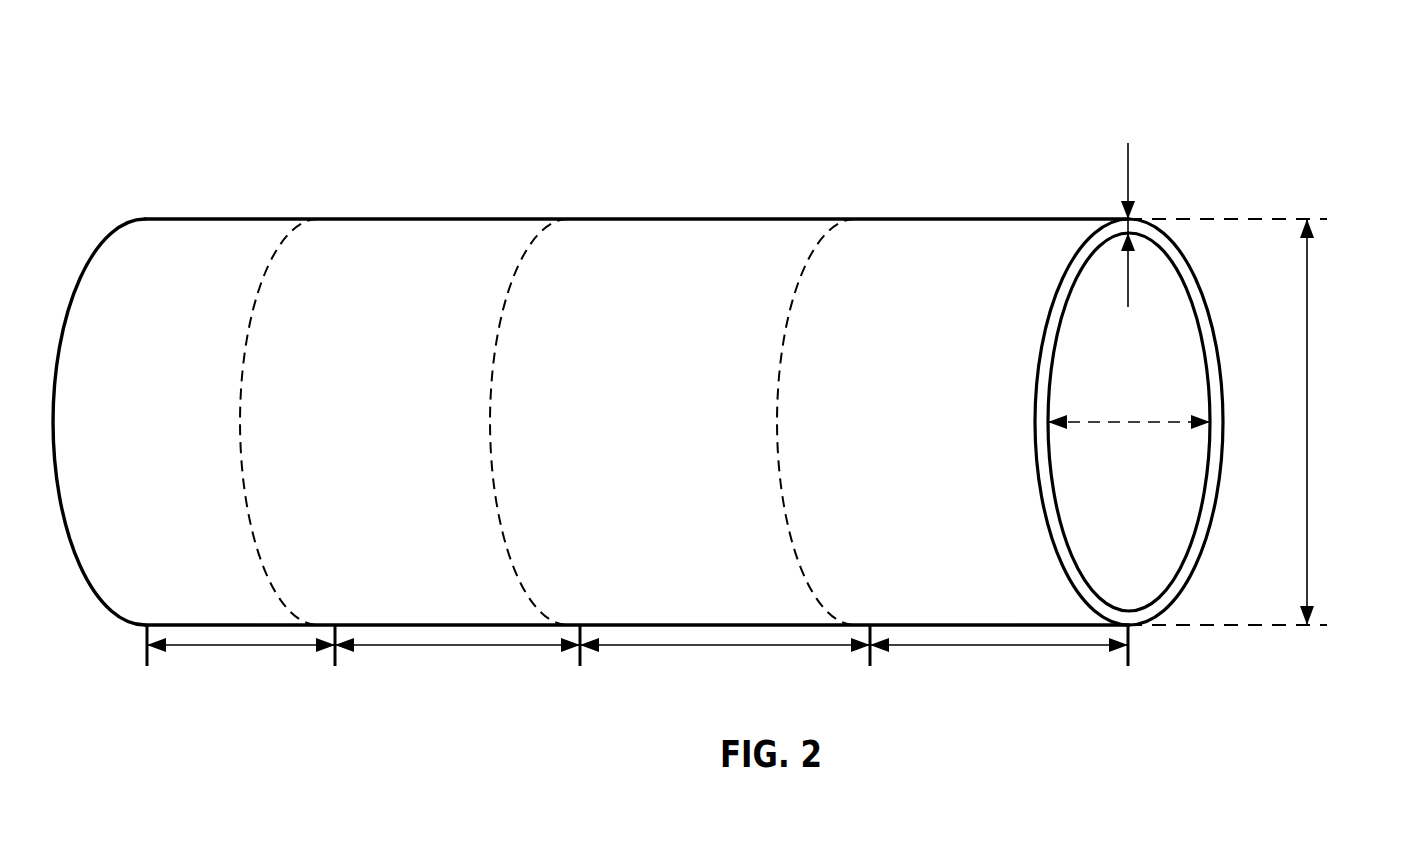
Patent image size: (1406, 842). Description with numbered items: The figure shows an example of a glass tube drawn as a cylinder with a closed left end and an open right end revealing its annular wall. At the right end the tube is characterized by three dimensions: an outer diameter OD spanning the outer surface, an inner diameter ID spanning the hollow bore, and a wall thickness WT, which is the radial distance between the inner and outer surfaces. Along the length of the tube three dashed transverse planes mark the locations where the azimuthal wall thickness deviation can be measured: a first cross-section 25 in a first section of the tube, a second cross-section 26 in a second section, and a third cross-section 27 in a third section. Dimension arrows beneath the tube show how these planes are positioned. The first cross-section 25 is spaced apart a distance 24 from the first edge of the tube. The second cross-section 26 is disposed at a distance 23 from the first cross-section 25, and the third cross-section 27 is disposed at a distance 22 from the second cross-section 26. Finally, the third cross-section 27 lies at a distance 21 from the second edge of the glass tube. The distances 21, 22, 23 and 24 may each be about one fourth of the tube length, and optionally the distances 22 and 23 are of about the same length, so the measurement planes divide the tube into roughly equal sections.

The distance from third cross-section to second edge 21 is at (999, 659).
The distance between second and third cross-sections 22 is at (725, 659).
The distance between first and second cross-sections 23 is at (457, 659).
The distance from first edge to first cross-section 24 is at (241, 659).
The first cross-section 25 is at (321, 219).
The second cross-section 26 is at (570, 219).
The third cross-section 27 is at (858, 219).
The wall thickness WT is at (1168, 225).
The inner diameter ID is at (1129, 403).
The outer diameter OD is at (1256, 422).